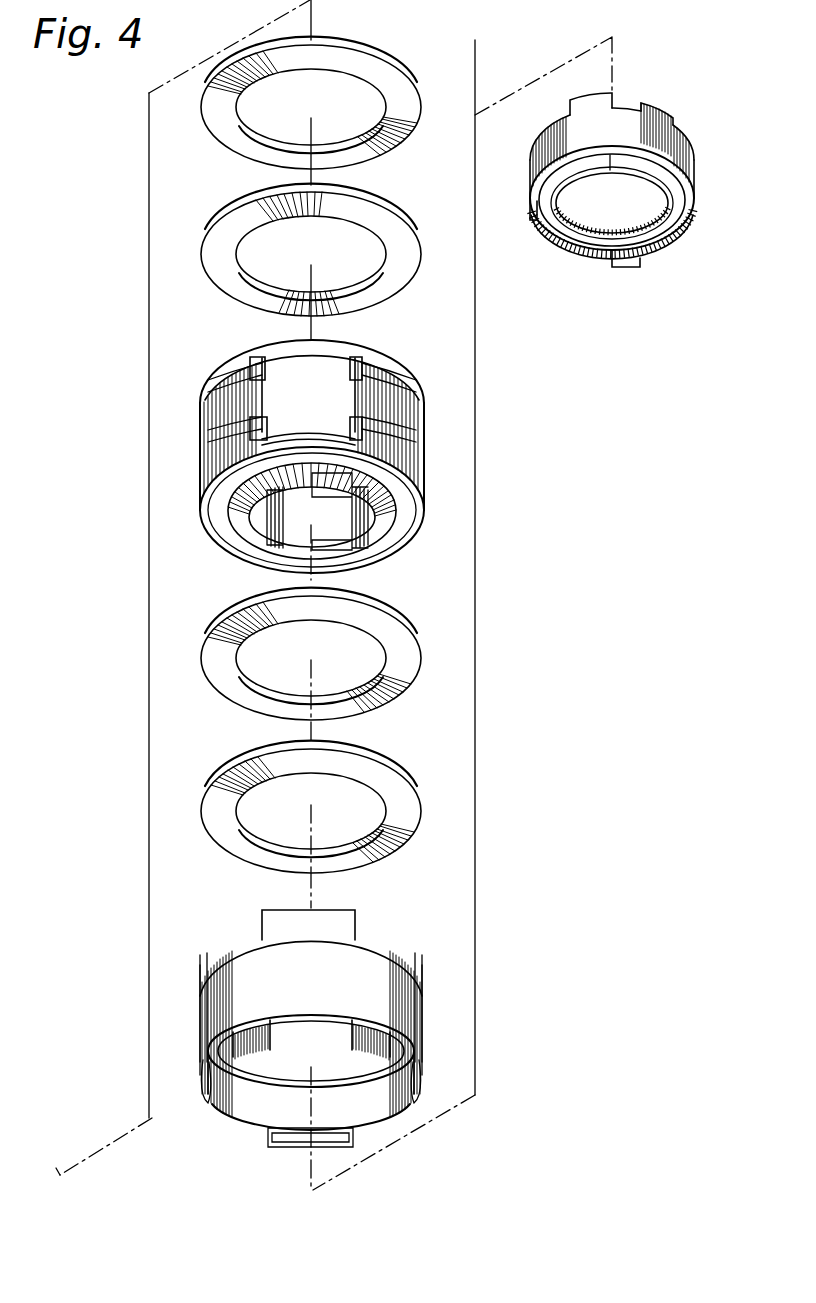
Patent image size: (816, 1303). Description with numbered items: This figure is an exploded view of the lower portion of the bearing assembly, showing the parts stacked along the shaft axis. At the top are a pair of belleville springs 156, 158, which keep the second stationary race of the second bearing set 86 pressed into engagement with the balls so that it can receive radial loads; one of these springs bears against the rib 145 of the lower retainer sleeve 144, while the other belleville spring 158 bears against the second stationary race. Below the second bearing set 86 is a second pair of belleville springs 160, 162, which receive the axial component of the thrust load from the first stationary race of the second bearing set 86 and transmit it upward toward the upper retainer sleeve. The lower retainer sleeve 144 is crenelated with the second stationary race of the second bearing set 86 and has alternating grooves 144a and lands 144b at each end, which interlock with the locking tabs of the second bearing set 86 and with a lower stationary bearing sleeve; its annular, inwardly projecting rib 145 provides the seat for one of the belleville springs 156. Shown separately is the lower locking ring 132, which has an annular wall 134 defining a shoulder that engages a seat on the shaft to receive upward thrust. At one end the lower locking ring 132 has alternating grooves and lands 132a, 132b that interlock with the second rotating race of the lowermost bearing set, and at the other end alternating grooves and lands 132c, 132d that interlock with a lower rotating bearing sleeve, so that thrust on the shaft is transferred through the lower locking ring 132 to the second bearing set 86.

The belleville spring 156 is at (362, 48).
The belleville spring 158 is at (362, 194).
The second bearing set 86 is at (420, 345).
The belleville spring 160 is at (372, 603).
The belleville spring 162 is at (368, 759).
The lower locking ring 132 is at (611, 179).
The grooves 132a is at (683, 172).
The lands 132b is at (532, 204).
The grooves 132c is at (629, 104).
The lands 132d is at (663, 112).
The annular wall 134 is at (571, 221).
The lower retainer sleeve 144 is at (312, 1027).
The grooves 144a is at (229, 950).
The lands 144b is at (203, 952).
The inwardly projecting rib 145 is at (329, 1084).